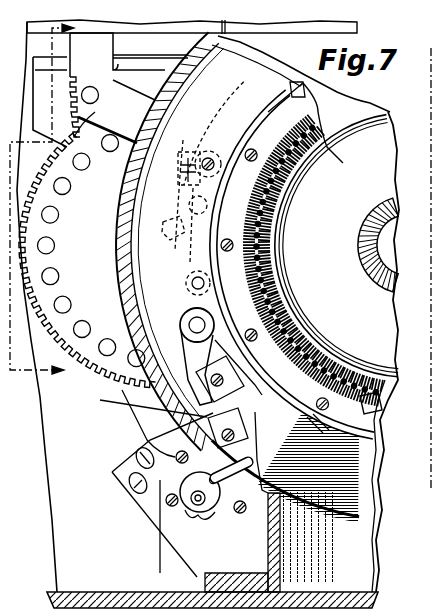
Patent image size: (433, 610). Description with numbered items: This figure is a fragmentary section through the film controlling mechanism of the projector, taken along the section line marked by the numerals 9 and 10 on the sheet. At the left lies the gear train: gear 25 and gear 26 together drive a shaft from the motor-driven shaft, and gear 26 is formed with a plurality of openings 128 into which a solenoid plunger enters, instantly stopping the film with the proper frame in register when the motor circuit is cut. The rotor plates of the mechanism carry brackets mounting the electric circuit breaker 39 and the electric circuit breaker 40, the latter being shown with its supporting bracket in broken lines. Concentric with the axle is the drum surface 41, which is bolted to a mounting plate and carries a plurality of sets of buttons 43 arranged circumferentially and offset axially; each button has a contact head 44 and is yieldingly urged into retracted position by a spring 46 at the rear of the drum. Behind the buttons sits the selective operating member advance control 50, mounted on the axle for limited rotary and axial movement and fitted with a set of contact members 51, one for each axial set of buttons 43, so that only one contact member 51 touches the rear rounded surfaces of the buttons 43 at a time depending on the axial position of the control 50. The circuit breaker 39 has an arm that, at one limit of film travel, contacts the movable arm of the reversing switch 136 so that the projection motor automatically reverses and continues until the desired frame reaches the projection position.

The section line 9- 9 is at (41, 213).
The section line 10- 10 is at (220, 316).
The gear 25 is at (80, 117).
The gear 26 is at (103, 372).
The electric circuit breaker 39 is at (213, 413).
The electric circuit breaker 40 is at (203, 188).
The drum surface 41 is at (293, 107).
The buttons 43 is at (373, 408).
The contact head 44 is at (270, 110).
The spring 46 is at (332, 129).
The selective operating member advance control 50 is at (372, 264).
The contact members 51 is at (338, 372).
The openings 128 is at (57, 279).
The reversing switch 136 is at (185, 478).